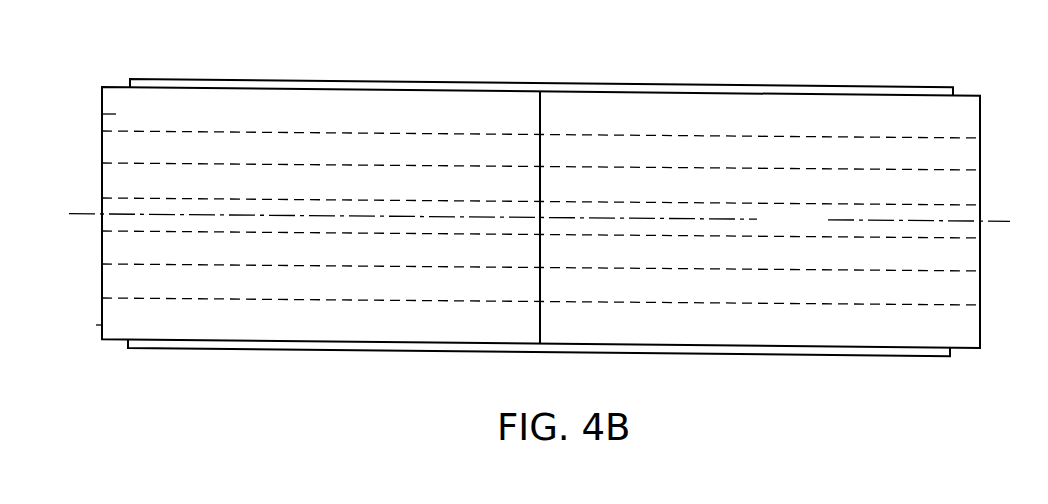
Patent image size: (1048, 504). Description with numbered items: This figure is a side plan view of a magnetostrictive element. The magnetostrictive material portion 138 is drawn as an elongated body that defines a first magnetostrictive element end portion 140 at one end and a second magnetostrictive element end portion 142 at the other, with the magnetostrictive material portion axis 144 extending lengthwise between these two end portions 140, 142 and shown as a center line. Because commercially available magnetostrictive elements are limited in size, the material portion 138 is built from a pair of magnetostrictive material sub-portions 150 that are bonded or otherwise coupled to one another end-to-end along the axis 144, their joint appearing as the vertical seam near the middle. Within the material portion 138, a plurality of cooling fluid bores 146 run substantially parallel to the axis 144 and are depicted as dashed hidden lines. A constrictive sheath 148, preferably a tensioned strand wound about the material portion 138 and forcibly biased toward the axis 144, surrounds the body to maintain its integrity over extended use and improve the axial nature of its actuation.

The magnetostrictive material portion 138 is at (102, 114).
The first magnetostrictive element end portion 140 is at (96, 325).
The second magnetostrictive element end portion 142 is at (979, 342).
The magnetostrictive material portion axis 144 is at (78, 211).
The cooling fluid bores 146 is at (877, 166).
The constrictive sheath 148 is at (375, 80).
The magnetostrictive material sub-portions 150 is at (476, 103).